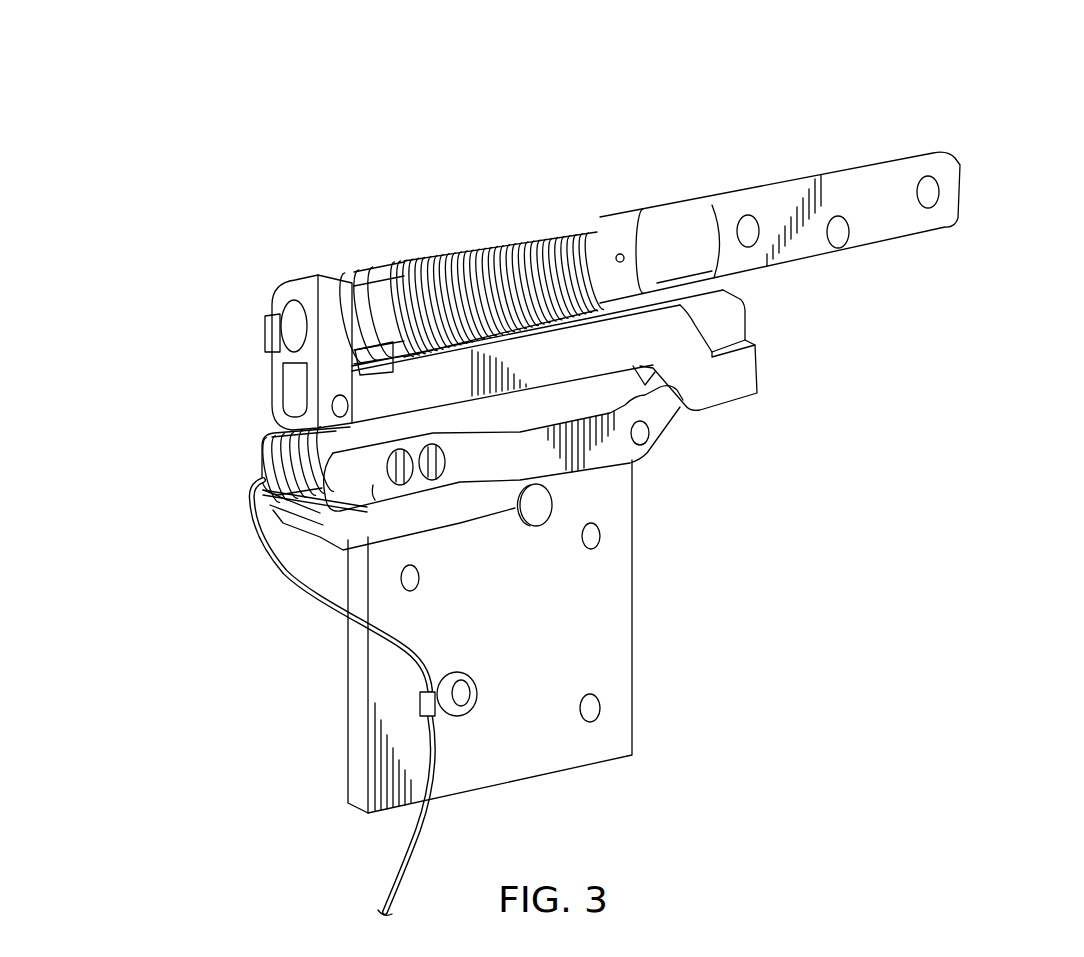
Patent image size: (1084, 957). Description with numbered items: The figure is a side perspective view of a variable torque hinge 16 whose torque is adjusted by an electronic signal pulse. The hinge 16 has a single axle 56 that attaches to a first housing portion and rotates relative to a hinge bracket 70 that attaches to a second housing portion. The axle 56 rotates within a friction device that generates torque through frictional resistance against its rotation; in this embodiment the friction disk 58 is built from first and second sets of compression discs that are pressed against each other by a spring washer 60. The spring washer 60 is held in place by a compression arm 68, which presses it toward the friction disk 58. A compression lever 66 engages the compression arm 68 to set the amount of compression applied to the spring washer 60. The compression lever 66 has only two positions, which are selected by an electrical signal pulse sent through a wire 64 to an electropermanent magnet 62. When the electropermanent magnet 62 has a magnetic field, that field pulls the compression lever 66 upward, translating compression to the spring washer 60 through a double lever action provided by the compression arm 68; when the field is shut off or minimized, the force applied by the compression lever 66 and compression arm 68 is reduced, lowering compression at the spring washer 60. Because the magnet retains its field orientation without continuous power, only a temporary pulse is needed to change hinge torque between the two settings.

The variable torque hinge 16 is at (380, 66).
The axle 56 is at (771, 184).
The friction disk 58 is at (378, 255).
The spring washer 60 is at (328, 263).
The electropermanent magnet 62 is at (244, 438).
The wire 64 is at (280, 563).
The compression lever 66 is at (480, 508).
The compression arm 68 is at (730, 400).
The hinge bracket 70 is at (634, 592).